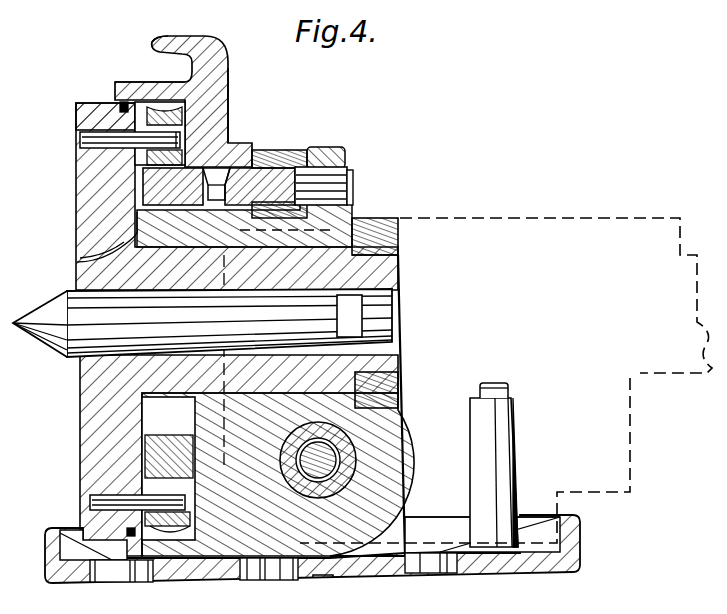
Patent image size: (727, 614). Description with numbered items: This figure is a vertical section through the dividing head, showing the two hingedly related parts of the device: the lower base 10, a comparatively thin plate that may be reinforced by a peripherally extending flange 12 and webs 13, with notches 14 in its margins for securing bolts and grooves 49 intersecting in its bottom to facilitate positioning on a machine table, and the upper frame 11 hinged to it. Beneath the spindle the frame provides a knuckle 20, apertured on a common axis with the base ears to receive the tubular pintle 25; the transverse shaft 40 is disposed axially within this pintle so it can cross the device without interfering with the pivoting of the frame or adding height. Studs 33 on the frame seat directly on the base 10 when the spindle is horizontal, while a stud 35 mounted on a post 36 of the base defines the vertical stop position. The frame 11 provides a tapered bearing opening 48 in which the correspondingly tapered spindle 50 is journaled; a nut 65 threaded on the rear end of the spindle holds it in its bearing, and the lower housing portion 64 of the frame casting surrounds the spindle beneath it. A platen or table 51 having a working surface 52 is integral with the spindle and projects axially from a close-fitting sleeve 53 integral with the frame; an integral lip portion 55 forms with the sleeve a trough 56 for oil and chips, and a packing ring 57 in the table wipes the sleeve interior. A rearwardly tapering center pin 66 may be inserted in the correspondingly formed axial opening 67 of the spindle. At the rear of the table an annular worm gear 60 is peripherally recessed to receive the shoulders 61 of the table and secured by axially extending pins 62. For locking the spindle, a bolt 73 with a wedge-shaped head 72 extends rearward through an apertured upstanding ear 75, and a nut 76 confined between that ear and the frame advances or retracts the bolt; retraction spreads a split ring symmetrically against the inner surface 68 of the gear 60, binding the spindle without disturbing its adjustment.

The base 10 is at (222, 580).
The frame 11 is at (340, 220).
The peripherally extending flange 12 is at (427, 526).
The webs 13 is at (73, 547).
The notches 14 is at (340, 183).
The knuckle 20 is at (400, 425).
The tubular pintle 25 is at (356, 455).
The studs 33 is at (148, 565).
The stud 35 is at (505, 388).
The post 36 is at (518, 452).
The transverse shaft 40 is at (332, 468).
The tapered bearing opening 48 is at (349, 200).
The grooves 49 is at (332, 574).
The spindle 50 is at (383, 268).
The platen or table 51 is at (86, 202).
The working surface 52 is at (78, 240).
The sleeve 53 is at (120, 97).
The lip portion 55 is at (164, 45).
The trough 56 is at (185, 63).
The packing ring 57 is at (112, 103).
The worm gear 60 is at (183, 117).
The shoulders 61 is at (145, 102).
The axially extending pins 62 is at (82, 137).
The lower housing portion 64 is at (86, 265).
The nut 65 is at (390, 221).
The center pin 66 is at (46, 342).
The opening 67 is at (383, 308).
The inner surface 68 is at (214, 174).
The wedge-shaped head 72 is at (150, 183).
The bolt 73 is at (234, 160).
The apertured upstanding ear 75 is at (334, 150).
The nut 76 is at (281, 151).